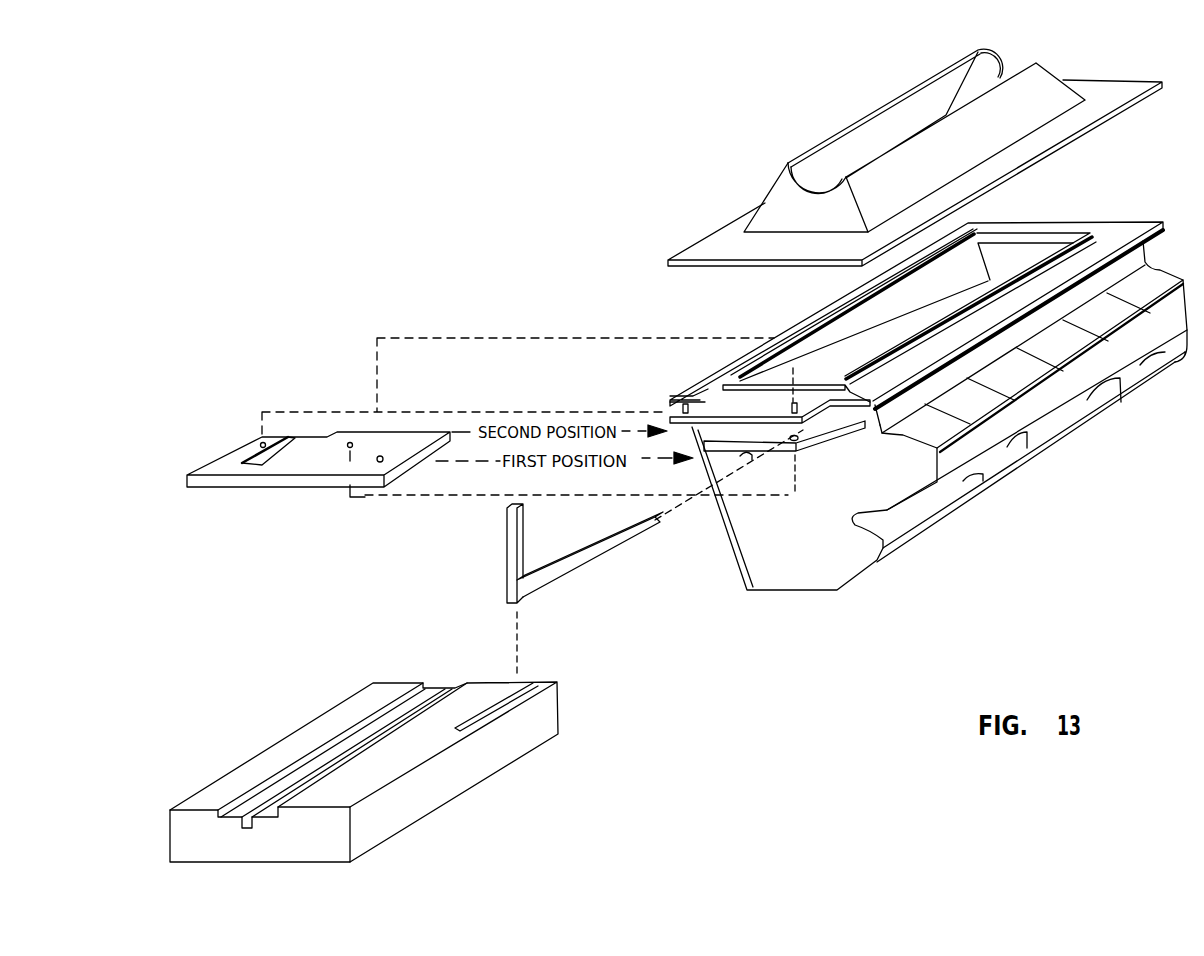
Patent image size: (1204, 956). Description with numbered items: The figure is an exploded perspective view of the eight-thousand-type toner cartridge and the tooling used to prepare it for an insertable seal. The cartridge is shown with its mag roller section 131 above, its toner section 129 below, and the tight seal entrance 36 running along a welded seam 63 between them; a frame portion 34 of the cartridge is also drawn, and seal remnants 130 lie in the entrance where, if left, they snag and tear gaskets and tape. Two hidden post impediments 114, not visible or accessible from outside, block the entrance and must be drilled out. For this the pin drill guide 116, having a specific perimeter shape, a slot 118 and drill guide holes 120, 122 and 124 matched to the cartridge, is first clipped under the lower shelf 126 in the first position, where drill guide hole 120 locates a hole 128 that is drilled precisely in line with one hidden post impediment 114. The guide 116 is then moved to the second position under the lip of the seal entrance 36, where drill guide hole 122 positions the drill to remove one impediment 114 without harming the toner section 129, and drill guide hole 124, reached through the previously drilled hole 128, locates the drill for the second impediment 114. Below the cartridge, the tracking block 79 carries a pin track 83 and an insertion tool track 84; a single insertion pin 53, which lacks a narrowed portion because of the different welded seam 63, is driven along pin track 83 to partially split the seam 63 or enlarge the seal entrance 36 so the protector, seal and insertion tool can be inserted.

The frame 34 is at (1022, 238).
The seal entrance 36 is at (720, 408).
The insertion pin 53 is at (505, 557).
The welded seam 63 is at (843, 377).
The tracking block 79 is at (530, 755).
The pin track 83 is at (533, 683).
The insertion tool track 84 is at (248, 803).
The hidden post impediment 114 is at (793, 393).
The pin drill guide 116 is at (230, 490).
The slot 118 is at (292, 436).
The drill guide hole 120 is at (343, 447).
The drill guide hole 122 is at (261, 442).
The drill guide hole 124 is at (380, 455).
The lower shelf 126 is at (832, 440).
The hole 128 is at (799, 442).
The toner section 129 is at (988, 495).
The seal remnants 130 is at (962, 303).
The mag roller section 131 is at (828, 137).